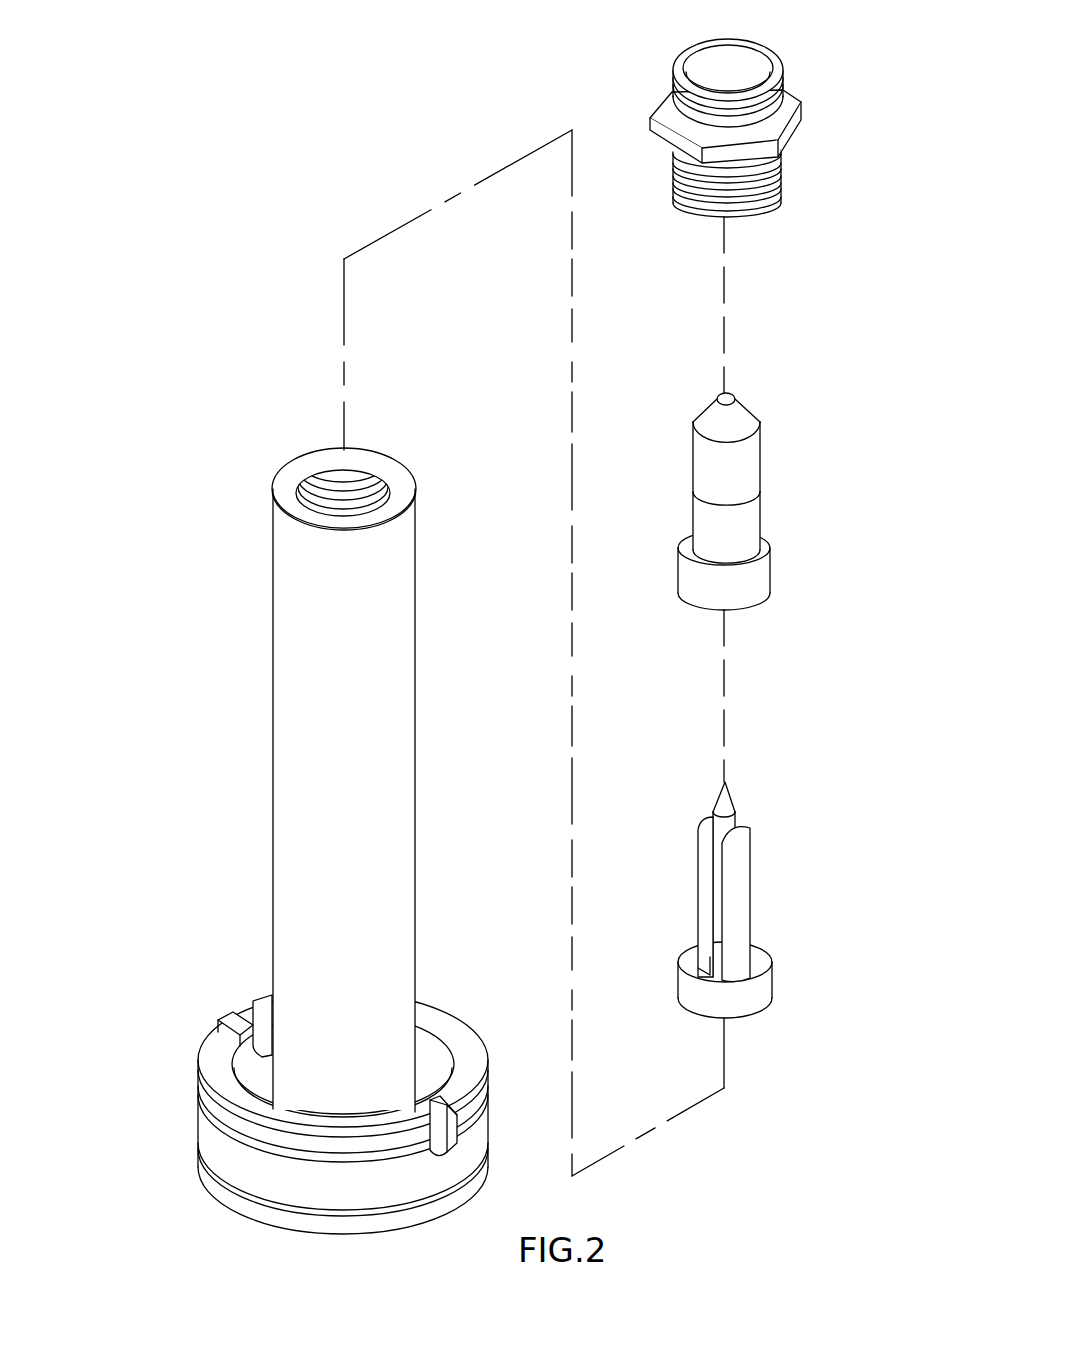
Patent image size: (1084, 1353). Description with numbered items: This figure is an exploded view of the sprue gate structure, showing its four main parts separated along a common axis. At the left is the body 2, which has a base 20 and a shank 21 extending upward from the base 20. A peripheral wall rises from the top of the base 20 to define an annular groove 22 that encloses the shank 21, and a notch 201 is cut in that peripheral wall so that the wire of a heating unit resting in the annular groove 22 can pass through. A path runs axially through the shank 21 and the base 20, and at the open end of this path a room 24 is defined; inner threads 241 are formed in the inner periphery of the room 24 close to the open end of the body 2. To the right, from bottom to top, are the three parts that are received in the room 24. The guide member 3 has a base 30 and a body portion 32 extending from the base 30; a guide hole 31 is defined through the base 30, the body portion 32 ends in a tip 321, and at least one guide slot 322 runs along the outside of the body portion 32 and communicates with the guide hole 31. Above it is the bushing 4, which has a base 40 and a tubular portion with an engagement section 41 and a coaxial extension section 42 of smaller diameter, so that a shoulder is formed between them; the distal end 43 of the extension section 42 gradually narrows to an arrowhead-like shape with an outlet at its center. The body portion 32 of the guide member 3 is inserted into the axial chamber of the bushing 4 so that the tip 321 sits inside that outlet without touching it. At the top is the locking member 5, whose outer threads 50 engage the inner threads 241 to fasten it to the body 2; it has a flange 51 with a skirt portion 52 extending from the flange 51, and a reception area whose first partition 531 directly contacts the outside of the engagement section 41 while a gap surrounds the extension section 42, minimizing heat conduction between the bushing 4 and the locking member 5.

The body 2 is at (342, 808).
The base 20 is at (217, 1140).
The notch 201 is at (247, 1010).
The shank 21 is at (288, 853).
The annular groove 22 is at (260, 1080).
The room 24 is at (310, 449).
The inner threads 241 is at (335, 513).
The guide member 3 is at (706, 890).
The base 30 is at (680, 987).
The guide hole 31 is at (677, 937).
The body portion 32 is at (727, 872).
The tip 321 is at (717, 803).
The guide slot 322 is at (691, 869).
The bushing 4 is at (710, 482).
The base 40 is at (690, 578).
The engagement section 41 is at (697, 520).
The extension section 42 is at (697, 448).
The distal end 43 is at (743, 415).
The locking member 5 is at (715, 114).
The outer threads 50 is at (778, 182).
The flange 51 is at (793, 117).
The skirt portion 52 is at (766, 69).
The first partition 531 is at (735, 65).